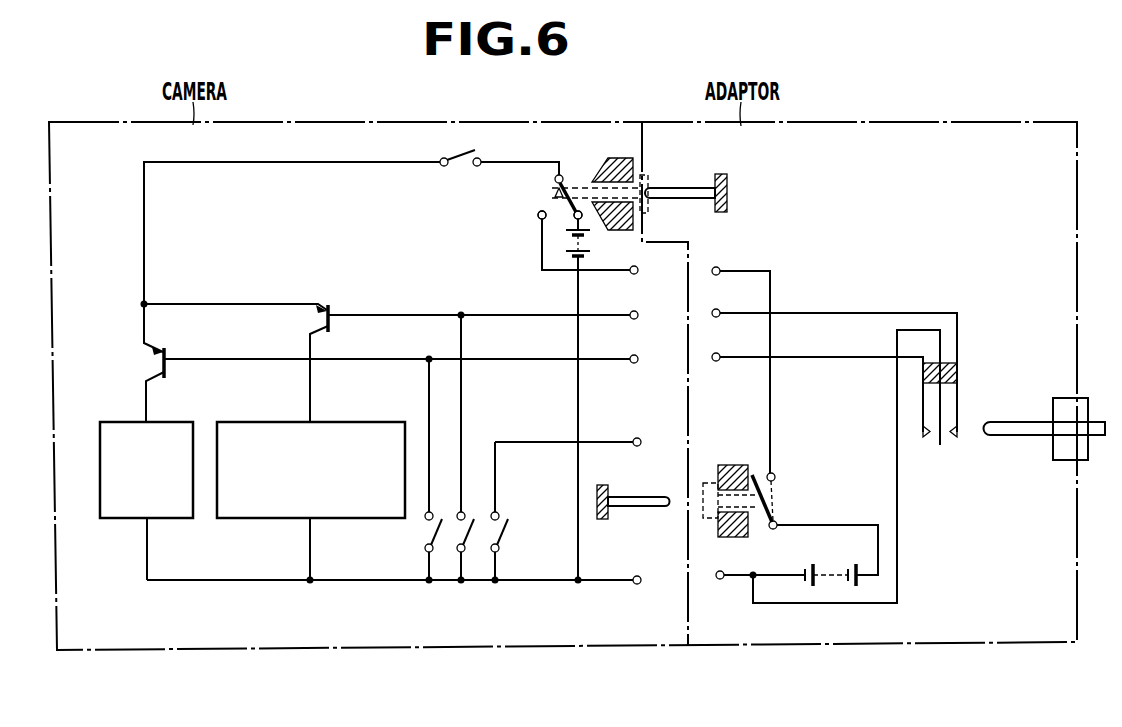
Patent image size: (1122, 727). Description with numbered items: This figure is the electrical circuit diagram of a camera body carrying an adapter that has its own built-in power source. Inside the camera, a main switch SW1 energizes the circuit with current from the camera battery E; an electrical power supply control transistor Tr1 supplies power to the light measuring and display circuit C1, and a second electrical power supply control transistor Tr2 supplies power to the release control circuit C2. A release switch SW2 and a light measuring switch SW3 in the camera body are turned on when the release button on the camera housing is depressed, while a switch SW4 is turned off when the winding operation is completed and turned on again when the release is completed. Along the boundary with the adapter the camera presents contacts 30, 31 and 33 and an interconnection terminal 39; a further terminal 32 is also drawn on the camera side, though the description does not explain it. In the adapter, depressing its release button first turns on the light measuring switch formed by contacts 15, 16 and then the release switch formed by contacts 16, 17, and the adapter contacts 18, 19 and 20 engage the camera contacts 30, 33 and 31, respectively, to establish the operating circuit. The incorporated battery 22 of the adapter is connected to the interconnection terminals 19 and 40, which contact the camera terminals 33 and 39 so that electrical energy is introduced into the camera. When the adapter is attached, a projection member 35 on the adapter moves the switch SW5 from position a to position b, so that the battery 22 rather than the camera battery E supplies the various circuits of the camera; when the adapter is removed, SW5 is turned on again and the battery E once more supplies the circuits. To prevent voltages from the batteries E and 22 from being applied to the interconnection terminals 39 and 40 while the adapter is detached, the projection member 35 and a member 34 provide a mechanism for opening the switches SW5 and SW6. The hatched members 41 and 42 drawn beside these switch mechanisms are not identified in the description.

The light measuring switch contact 15 is at (964, 447).
The common switch contact 16 is at (854, 466).
The release switch contact 17 is at (935, 416).
The adapter contact 18 is at (831, 356).
The interconnection terminal 19 is at (912, 483).
The adapter contact 20 is at (814, 378).
The incorporated battery 22 is at (828, 565).
The camera contact 30 is at (497, 316).
The camera contact 31 is at (415, 361).
The camera terminal 32 is at (582, 444).
The camera terminal 33 is at (399, 563).
The member 34 is at (643, 497).
The projection member 35 is at (676, 190).
The interconnection terminal 39 is at (604, 252).
The interconnection terminal 40 is at (737, 354).
The camera insulating member 41 is at (622, 181).
The adaptor insulating member 42 is at (723, 470).
The main switch SW1 is at (351, 216).
The release switch SW2 is at (414, 469).
The light measuring switch SW3 is at (465, 530).
The switch SW4 is at (514, 511).
The switch SW5 is at (556, 207).
The switch SW6 is at (815, 524).
The electrical power supply control transistor Tr1 is at (248, 349).
The electrical power supply control transistor Tr2 is at (163, 363).
The light measuring and display circuit C1 is at (224, 519).
The release control circuit C2 is at (105, 519).
The battery E is at (583, 399).
The switch position a is at (584, 213).
The switch position b is at (534, 213).